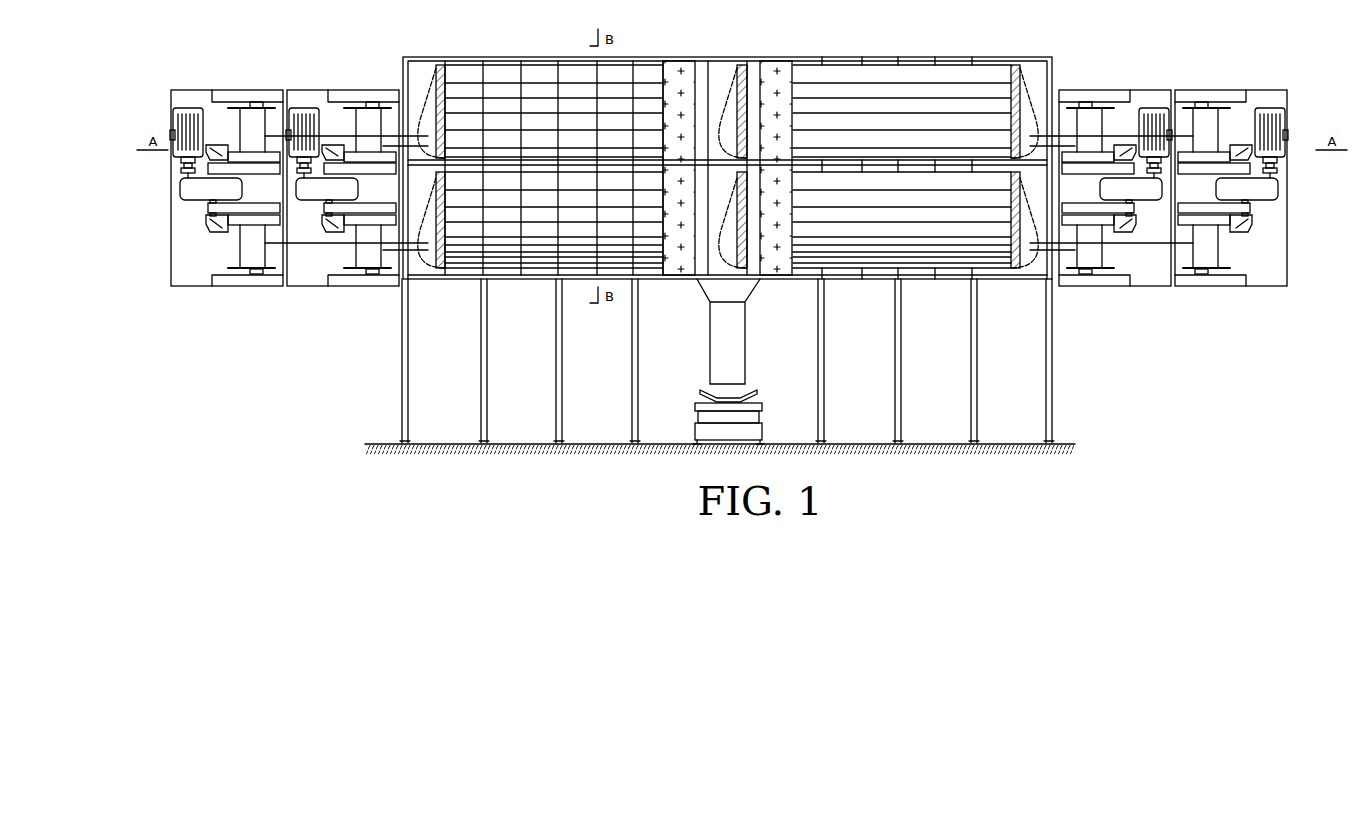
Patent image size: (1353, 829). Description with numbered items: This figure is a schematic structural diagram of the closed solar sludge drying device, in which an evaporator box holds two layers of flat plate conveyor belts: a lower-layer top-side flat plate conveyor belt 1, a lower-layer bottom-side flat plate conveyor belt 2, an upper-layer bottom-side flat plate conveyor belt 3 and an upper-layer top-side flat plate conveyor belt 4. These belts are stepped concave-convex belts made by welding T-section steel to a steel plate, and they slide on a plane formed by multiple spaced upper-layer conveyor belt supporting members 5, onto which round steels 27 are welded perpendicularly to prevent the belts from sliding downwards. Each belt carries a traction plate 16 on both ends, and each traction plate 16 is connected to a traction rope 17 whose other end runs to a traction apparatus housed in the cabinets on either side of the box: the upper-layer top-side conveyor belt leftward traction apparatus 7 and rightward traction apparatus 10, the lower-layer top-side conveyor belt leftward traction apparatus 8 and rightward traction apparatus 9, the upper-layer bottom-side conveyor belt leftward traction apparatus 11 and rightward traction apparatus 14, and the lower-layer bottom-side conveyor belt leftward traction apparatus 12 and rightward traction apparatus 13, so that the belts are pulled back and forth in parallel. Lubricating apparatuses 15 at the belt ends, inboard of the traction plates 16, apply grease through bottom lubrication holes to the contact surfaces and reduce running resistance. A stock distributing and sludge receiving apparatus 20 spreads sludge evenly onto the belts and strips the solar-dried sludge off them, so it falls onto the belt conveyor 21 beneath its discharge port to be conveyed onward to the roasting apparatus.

The lower-layer top-side flat plate conveyor belt 1 is at (503, 66).
The lower-layer bottom-side flat plate conveyor belt 2 is at (548, 257).
The upper-layer bottom-side flat plate conveyor belt 3 is at (880, 258).
The upper-layer top-side flat plate conveyor belt 4 is at (868, 82).
The upper-layer conveyor belt supporting member 5 is at (597, 76).
The upper-layer top-side conveyor belt leftward traction apparatus 7 is at (262, 134).
The lower-layer top-side conveyor belt leftward traction apparatus 8 is at (357, 132).
The lower-layer top-side conveyor belt rightward traction apparatus 9 is at (1088, 128).
The upper-layer top-side conveyor belt rightward traction apparatus 10 is at (1192, 134).
The upper-layer bottom-side conveyor belt leftward traction apparatus 11 is at (262, 250).
The lower-layer bottom-side conveyor belt leftward traction apparatus 12 is at (369, 250).
The lower-layer bottom-side conveyor belt rightward traction apparatus 13 is at (1098, 250).
The upper-layer bottom-side conveyor belt rightward traction apparatus 14 is at (1192, 250).
The lubricating apparatus 15 is at (440, 70).
The traction plate 16 is at (425, 100).
The traction rope 17 is at (392, 144).
The stock distributing and sludge receiving apparatus 20 is at (672, 76).
The belt conveyor 21 is at (752, 392).
The round steel 27 is at (975, 175).